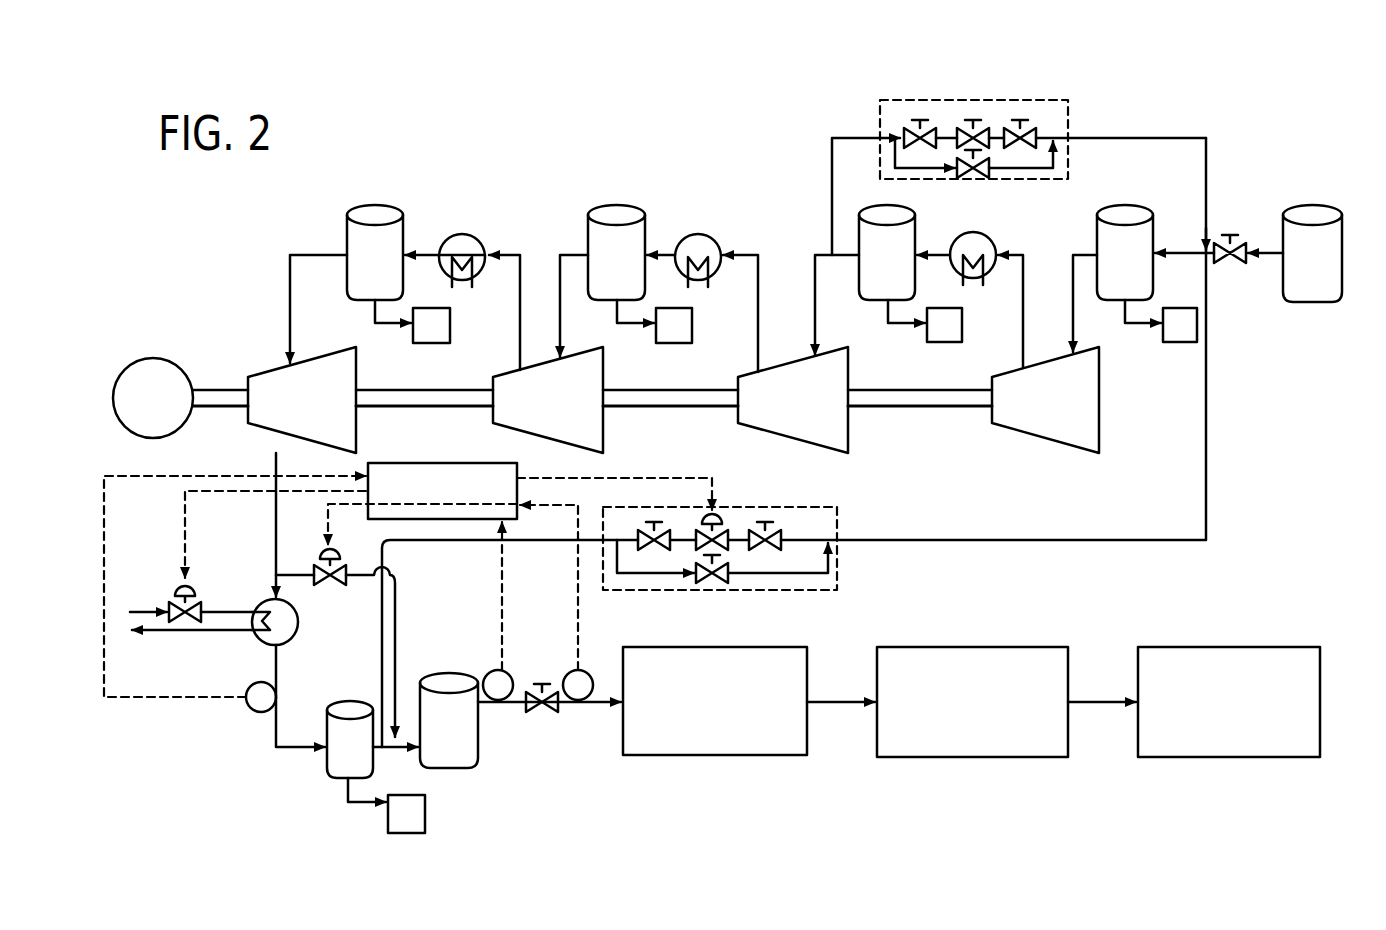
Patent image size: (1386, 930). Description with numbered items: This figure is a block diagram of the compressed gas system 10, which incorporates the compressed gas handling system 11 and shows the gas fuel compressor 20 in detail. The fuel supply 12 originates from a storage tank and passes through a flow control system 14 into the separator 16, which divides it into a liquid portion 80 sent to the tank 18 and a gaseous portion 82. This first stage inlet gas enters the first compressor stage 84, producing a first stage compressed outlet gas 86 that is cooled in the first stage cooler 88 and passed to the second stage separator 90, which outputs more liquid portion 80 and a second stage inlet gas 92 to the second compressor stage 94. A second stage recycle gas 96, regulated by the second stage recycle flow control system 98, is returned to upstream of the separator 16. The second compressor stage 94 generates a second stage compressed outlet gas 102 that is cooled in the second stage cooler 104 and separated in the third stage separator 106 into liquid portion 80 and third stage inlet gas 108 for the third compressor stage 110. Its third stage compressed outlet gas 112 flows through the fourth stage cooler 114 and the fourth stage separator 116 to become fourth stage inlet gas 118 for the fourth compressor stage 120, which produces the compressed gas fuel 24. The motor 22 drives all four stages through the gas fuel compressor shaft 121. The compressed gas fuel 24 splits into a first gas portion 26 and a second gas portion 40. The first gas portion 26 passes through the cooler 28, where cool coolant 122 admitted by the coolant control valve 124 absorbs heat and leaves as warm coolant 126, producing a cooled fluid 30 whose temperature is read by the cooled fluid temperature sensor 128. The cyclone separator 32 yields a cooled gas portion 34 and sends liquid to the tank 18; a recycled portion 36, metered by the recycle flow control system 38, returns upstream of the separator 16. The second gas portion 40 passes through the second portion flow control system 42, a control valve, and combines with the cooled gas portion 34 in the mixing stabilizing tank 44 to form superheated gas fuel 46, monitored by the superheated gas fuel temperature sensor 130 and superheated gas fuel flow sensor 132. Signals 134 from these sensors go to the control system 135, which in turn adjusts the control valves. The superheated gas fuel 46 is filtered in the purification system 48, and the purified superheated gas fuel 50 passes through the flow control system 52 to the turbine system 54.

The compressed gas system 10 is at (1040, 66).
The compressed gas handling system 11 is at (455, 826).
The fuel supply 12 is at (1313, 302).
The flow control system 14 is at (1228, 264).
The separator 16 is at (1093, 228).
The tank 18 is at (792, 570).
The gas fuel compressor 20 is at (237, 343).
The motor 22 is at (153, 357).
The compressed gas fuel 24 is at (276, 535).
The first gas portion 26 is at (276, 575).
The cooler 28 is at (290, 638).
The cooled fluid 30 is at (277, 683).
The cyclone separator 32 is at (336, 782).
The cooled gas portion 34 is at (382, 750).
The recycled portion 36 is at (381, 686).
The recycle flow control system 38 is at (685, 590).
The second gas portion 40 is at (292, 578).
The second portion flow control system 42 is at (340, 586).
The mixing stabilizing tank 44 is at (450, 768).
The superheated gas fuel 46 is at (530, 712).
The purification system 48 is at (710, 755).
The purified superheated gas fuel 50 is at (832, 700).
The flow control system 52 is at (972, 757).
The turbine system 54 is at (1230, 757).
The liquid portion 80 is at (385, 324).
The gaseous portion 82 is at (1071, 290).
The first compressor stage 84 is at (1057, 443).
The first stage compressed outlet gas 86 is at (1022, 318).
The first stage cooler 88 is at (977, 232).
The second stage separator 90 is at (913, 212).
The second stage inlet gas 92 is at (812, 298).
The second compressor stage 94 is at (848, 440).
The second stage recycle gas 96 is at (828, 205).
The second stage recycle flow control system 98 is at (952, 100).
The second stage compressed outlet gas 102 is at (757, 318).
The second stage cooler 104 is at (703, 234).
The third stage separator 106 is at (616, 205).
The third stage inlet gas 108 is at (557, 285).
The third compressor stage 110 is at (603, 425).
The third stage compressed outlet gas 112 is at (518, 318).
The fourth stage cooler 114 is at (467, 234).
The fourth stage separator 116 is at (377, 204).
The fourth stage inlet gas 118 is at (290, 285).
The fourth compressor stage 120 is at (356, 430).
The gas fuel compressor shaft 121 is at (905, 407).
The cool coolant 122 is at (160, 610).
The coolant control valve 124 is at (203, 604).
The warm coolant 126 is at (185, 632).
The cooled fluid temperature sensor 128 is at (253, 712).
The superheated gas fuel temperature sensor 130 is at (500, 670).
The superheated gas fuel flow sensor 132 is at (572, 670).
The signals 134 is at (173, 700).
The control system 135 is at (430, 462).